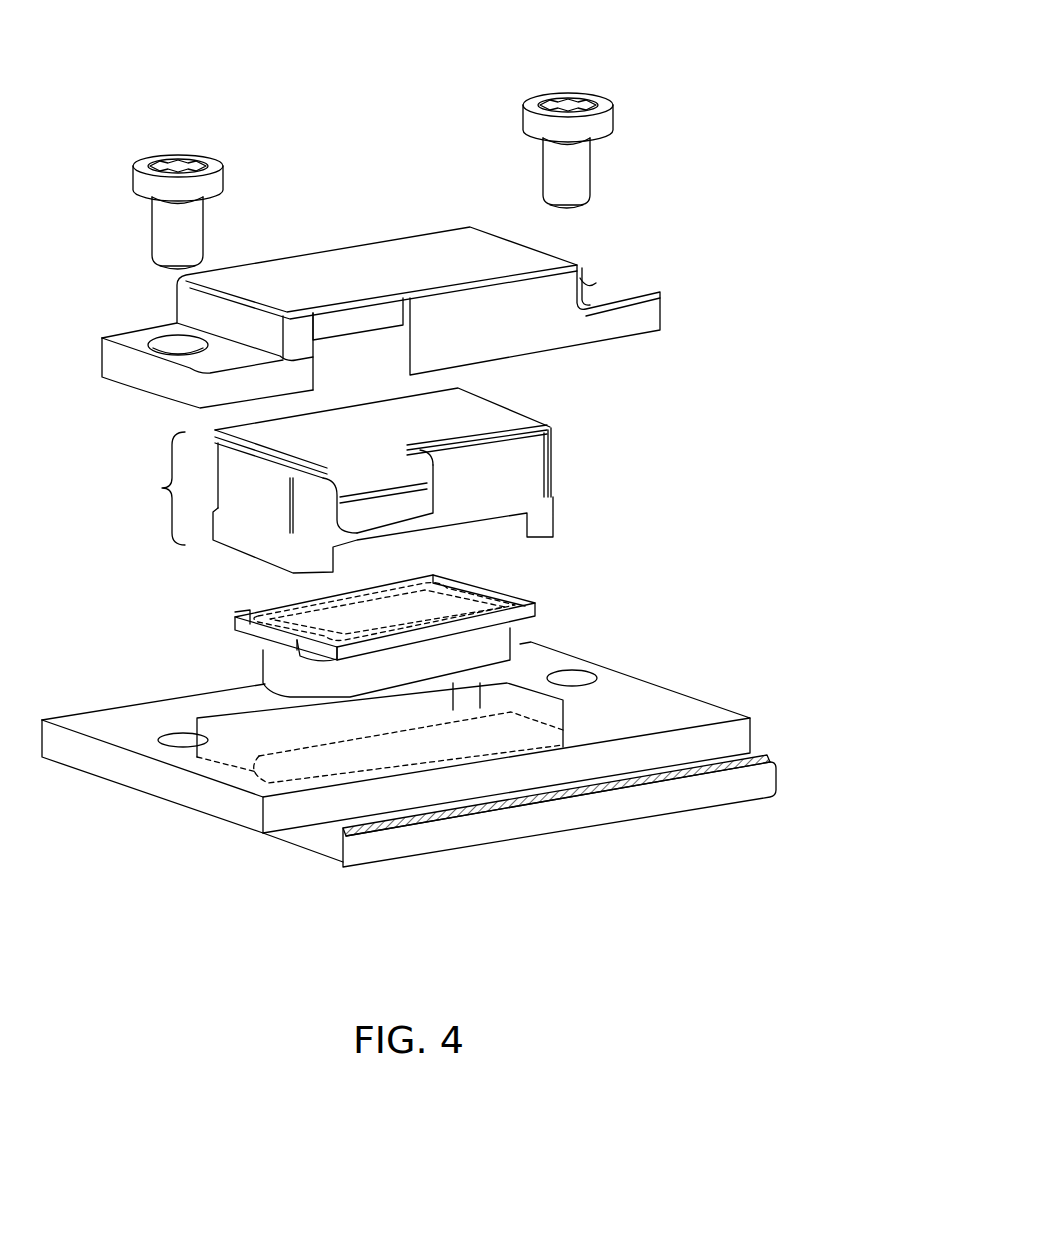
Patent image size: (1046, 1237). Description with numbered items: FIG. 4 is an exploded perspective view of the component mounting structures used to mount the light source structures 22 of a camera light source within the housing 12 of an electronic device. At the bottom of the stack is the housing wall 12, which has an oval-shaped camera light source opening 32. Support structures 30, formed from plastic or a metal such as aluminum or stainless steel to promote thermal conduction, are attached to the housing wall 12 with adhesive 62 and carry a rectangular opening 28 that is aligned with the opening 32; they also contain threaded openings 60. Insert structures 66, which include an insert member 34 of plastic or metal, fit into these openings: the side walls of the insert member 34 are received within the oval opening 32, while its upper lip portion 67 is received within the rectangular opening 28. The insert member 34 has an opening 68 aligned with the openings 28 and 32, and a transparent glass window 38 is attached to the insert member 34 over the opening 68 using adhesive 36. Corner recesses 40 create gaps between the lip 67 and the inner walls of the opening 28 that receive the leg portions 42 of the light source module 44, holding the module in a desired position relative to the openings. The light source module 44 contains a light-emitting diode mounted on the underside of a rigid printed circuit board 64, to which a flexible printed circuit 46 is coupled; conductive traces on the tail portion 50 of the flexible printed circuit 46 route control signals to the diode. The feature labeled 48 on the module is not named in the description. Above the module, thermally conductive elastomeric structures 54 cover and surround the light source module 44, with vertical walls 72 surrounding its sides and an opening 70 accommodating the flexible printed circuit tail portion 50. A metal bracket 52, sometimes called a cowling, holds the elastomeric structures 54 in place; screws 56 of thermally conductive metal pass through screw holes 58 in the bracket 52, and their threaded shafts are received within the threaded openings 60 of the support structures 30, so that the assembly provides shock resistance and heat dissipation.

The light source structures 22 is at (808, 52).
The screws 56 is at (151, 226).
The metal bracket 52 is at (482, 243).
The screw holes 58 is at (164, 336).
The thermally conductive elastomeric structures 54 is at (401, 292).
The vertical walls 72 is at (499, 364).
The opening 70 is at (355, 370).
The flexible printed circuit 46 is at (513, 423).
The light source module 44 is at (370, 480).
The rigid printed circuit board 64 is at (513, 443).
The housing body 48 is at (507, 488).
The leg portions 42 is at (555, 527).
The tail portion 50 is at (367, 537).
The corner recesses 40 is at (462, 563).
The insert structures 66 is at (188, 636).
The opening 68 is at (318, 628).
The transparent glass window 38 is at (503, 592).
The adhesive 36 is at (413, 610).
The rectangular opening 28 is at (518, 683).
The threaded openings 60 is at (163, 737).
The upper lip portion 67 is at (245, 643).
The insert member 34 is at (373, 666).
The camera light source opening 32 is at (303, 747).
The support structures 30 is at (427, 735).
The housing wall 12 is at (551, 811).
The adhesive 62 is at (648, 780).